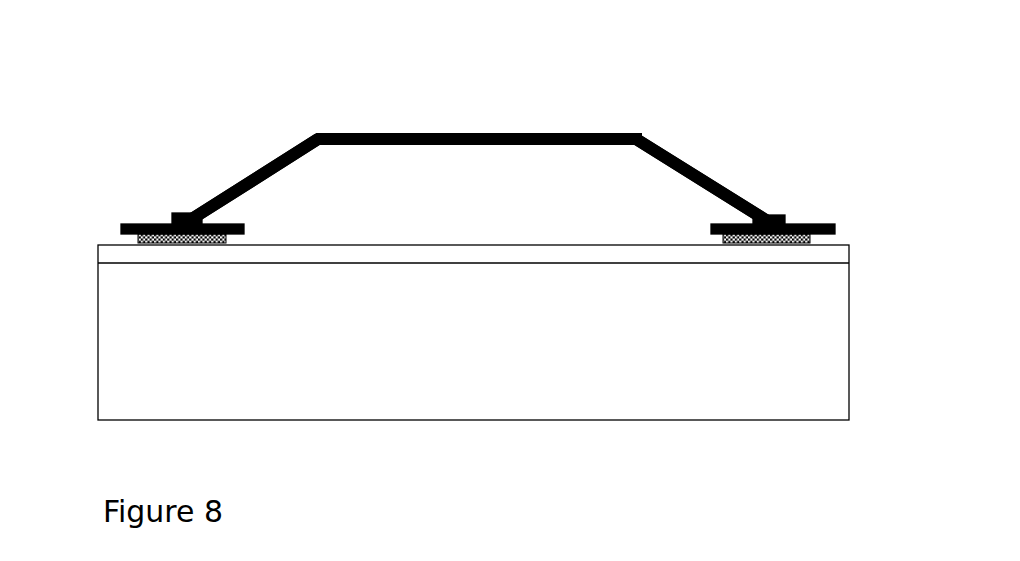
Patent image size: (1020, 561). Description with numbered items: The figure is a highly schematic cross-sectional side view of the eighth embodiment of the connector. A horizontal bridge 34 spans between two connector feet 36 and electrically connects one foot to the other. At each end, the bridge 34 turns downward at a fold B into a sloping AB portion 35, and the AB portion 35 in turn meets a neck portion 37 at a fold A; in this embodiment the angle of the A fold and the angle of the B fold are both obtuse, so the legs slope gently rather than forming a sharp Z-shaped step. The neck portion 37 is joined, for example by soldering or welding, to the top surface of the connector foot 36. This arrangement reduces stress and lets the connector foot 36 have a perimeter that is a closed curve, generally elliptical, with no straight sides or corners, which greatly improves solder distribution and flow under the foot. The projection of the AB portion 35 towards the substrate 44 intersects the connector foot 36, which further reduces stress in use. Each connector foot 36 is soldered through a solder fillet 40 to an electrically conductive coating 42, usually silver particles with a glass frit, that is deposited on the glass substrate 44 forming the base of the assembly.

The bridge 34 is at (413, 133).
The AB portion 35 is at (247, 175).
The connector foot 36 is at (230, 221).
The neck portion 37 is at (173, 213).
The solder fillet 40 is at (140, 240).
The electrically conductive coating 42 is at (110, 257).
The glass substrate 44 is at (117, 359).
The fold A is at (763, 213).
The fold B is at (642, 132).